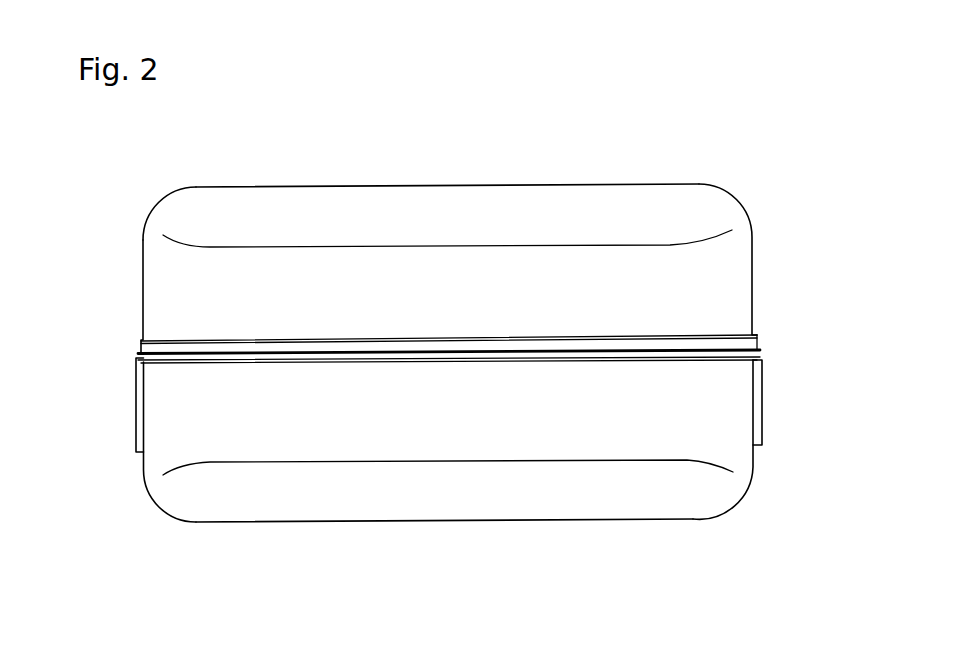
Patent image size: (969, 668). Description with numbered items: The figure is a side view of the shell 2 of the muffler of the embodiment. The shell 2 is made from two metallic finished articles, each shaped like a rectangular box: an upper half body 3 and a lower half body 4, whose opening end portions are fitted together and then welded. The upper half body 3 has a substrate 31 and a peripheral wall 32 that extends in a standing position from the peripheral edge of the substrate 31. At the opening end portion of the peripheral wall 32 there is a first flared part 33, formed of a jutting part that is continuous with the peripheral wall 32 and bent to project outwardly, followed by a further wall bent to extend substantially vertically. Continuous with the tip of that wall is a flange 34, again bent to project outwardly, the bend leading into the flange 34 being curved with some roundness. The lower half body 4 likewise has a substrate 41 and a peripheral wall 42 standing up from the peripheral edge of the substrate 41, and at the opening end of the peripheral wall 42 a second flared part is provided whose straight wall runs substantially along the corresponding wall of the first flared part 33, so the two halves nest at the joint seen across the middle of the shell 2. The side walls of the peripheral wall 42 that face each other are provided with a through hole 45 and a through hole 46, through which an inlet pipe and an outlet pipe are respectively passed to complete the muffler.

The shell 2 is at (458, 177).
The upper half body 3 is at (565, 183).
The lower half body 4 is at (510, 521).
The substrate 31 is at (335, 186).
The peripheral wall 32 is at (143, 283).
The first flared part 33 is at (175, 347).
The flange 34 is at (140, 363).
The substrate 41 is at (344, 523).
The peripheral wall 42 is at (263, 447).
The through hole 45 is at (136, 415).
The through hole 46 is at (762, 380).